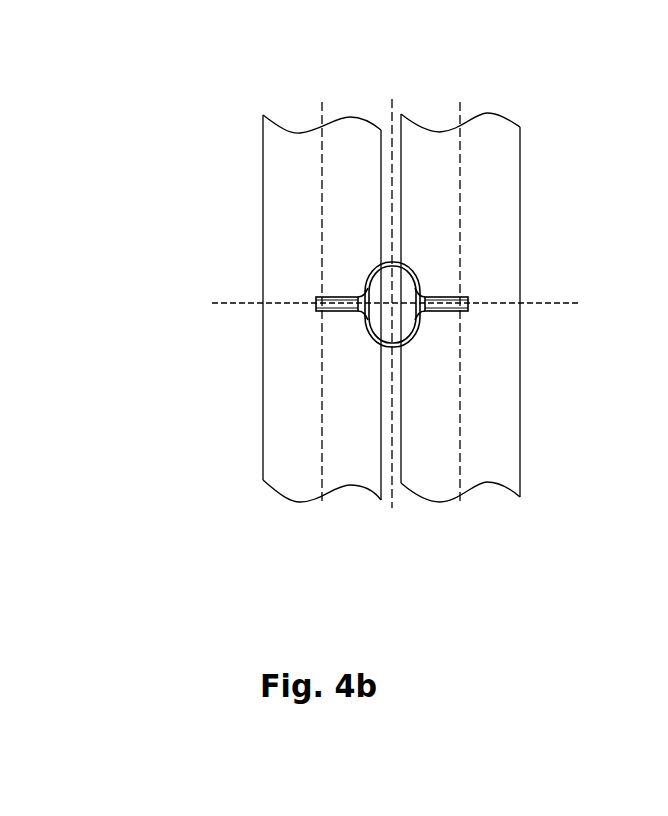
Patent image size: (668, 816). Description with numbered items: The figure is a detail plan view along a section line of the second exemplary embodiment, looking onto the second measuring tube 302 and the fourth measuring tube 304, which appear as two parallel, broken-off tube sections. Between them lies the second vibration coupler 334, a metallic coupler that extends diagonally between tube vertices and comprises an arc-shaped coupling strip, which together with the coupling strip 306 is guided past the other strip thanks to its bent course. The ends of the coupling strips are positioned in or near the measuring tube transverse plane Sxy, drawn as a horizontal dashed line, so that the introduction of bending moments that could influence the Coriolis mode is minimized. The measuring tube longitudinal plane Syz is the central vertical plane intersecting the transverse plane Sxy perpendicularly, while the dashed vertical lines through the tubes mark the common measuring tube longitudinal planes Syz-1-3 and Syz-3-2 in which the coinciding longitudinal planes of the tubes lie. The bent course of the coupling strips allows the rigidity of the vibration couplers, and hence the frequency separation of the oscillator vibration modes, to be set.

The fourth measuring tube 304 is at (267, 407).
The second measuring tube 302 is at (520, 408).
The coupling strip 306 is at (380, 338).
The second vibration coupler 334 is at (412, 262).
The measuring tube longitudinal plane Syz is at (392, 109).
The measuring tube transverse plane Sxy is at (250, 303).
The common measuring tube longitudinal plane Syz-1-3 is at (320, 440).
The common measuring tube longitudinal plane Syz-3-2 is at (462, 460).